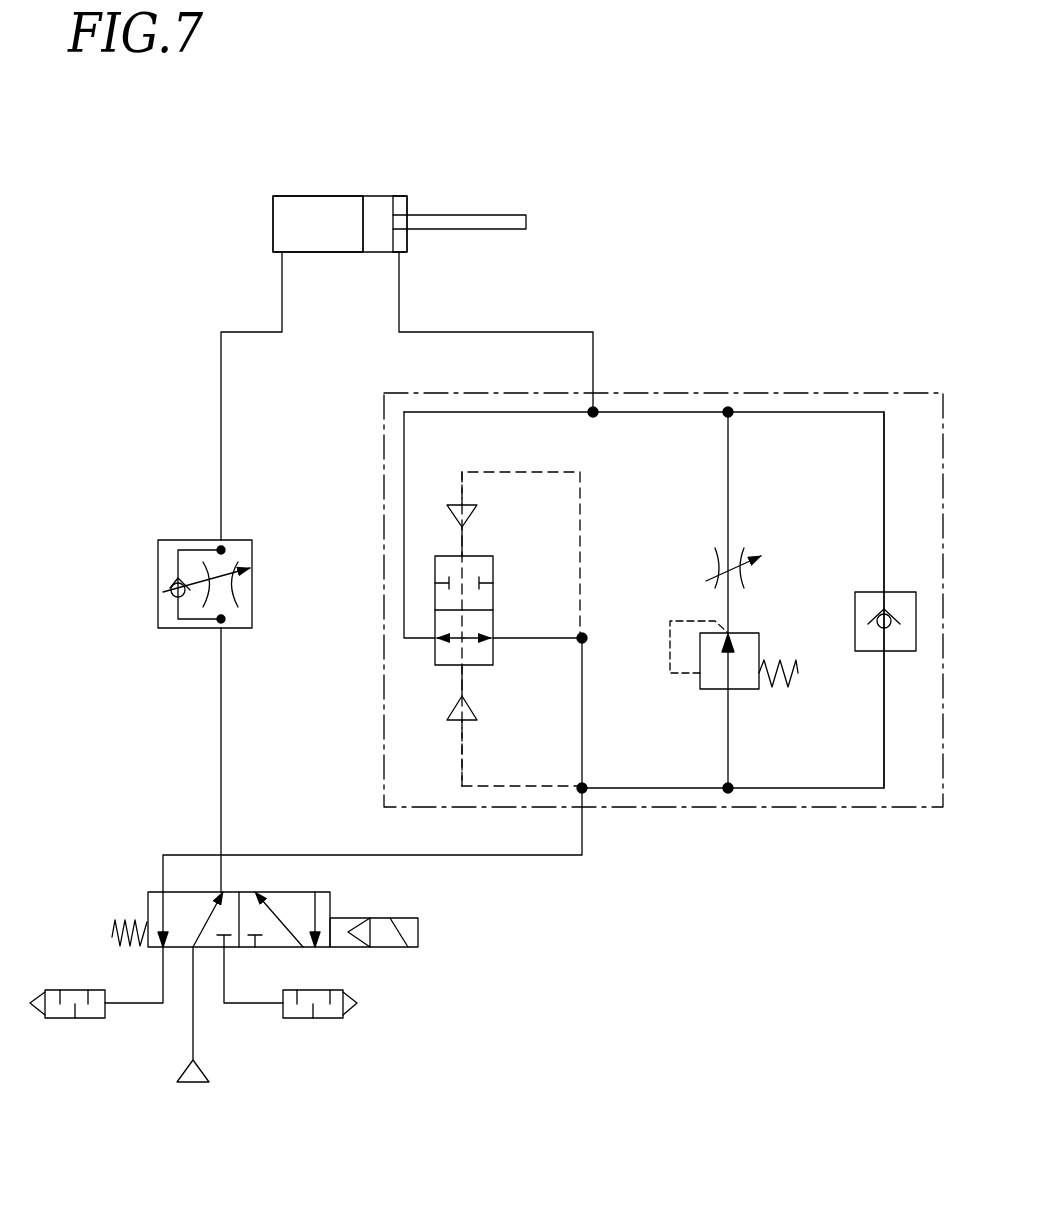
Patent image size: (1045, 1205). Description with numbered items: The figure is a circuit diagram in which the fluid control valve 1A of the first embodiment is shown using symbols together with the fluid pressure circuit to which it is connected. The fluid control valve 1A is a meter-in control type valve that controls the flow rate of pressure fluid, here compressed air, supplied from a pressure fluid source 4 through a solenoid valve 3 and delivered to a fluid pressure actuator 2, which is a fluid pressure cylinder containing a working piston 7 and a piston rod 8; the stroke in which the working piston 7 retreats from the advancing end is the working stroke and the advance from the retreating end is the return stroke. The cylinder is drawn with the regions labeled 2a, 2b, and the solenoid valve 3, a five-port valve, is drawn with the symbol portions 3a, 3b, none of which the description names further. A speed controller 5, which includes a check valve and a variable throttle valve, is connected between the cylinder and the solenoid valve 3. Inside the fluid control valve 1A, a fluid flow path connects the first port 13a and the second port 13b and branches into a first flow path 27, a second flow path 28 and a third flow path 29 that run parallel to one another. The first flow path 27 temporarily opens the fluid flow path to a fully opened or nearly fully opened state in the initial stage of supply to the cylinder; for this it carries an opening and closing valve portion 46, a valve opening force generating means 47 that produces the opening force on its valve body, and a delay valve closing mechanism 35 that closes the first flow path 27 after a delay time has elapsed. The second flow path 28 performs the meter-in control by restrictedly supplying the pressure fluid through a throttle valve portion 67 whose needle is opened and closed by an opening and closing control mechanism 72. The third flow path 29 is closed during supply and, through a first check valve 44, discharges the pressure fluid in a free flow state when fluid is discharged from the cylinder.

The fluid control valve 1A is at (772, 392).
The fluid pressure actuator 2 is at (353, 174).
The head-side chamber 2a is at (298, 210).
The rod-side chamber 2b is at (400, 210).
The solenoid valve 3 is at (233, 923).
The first valve position 3a is at (148, 900).
The second valve position 3b is at (300, 947).
The pressure fluid source 4 is at (205, 1075).
The speed controller 5 is at (158, 556).
The working piston 7 is at (375, 210).
The piston rod 8 is at (478, 222).
The first port 13a is at (585, 790).
The second port 13b is at (597, 410).
The first flow path 27 is at (583, 728).
The second flow path 28 is at (730, 745).
The third flow path 29 is at (884, 700).
The delay valve closing mechanism 35 is at (468, 508).
The first check valve 44 is at (866, 592).
The opening and closing valve portion 46 is at (493, 563).
The valve opening force generating means 47 is at (470, 706).
The throttle valve portion 67 is at (715, 562).
The opening and closing control mechanism 72 is at (745, 633).